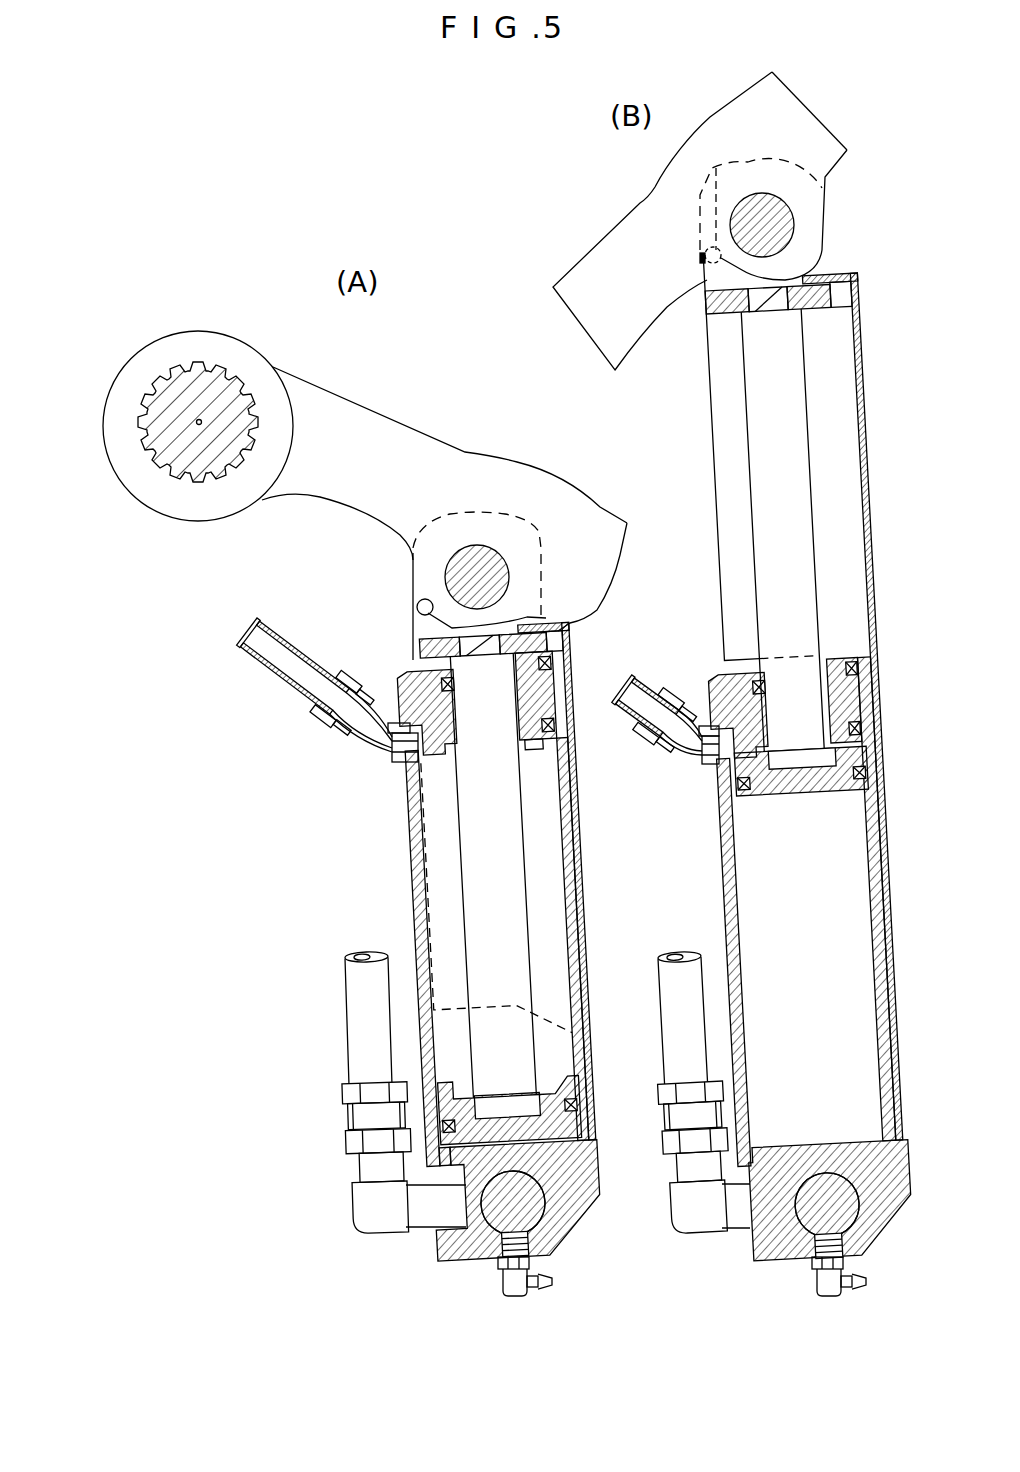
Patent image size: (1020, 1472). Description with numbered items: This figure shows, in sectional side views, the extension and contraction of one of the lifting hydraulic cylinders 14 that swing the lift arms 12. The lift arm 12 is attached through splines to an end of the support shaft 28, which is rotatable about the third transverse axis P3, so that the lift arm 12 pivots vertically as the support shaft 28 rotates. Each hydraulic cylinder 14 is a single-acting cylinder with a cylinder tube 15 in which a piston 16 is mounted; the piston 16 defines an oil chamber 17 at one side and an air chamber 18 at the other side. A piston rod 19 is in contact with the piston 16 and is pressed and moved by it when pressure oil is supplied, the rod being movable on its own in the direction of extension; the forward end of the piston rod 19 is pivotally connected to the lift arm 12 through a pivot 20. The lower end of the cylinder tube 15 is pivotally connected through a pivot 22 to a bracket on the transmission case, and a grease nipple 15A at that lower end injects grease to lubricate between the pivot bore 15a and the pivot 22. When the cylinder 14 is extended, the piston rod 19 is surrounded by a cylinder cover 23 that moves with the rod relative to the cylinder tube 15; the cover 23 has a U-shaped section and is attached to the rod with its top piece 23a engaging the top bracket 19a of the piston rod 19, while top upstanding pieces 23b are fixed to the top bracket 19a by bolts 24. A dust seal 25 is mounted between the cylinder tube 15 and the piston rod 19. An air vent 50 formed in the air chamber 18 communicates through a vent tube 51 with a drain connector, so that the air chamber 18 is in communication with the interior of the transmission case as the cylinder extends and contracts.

The lift arm 12 is at (375, 418).
The hydraulic cylinder 14 is at (394, 855).
The cylinder tube 15 is at (407, 910).
The pivot bore 15a is at (545, 1222).
The grease nipple 15A is at (555, 1280).
The piston 16 is at (470, 1100).
The oil chamber 17 is at (857, 912).
The air chamber 18 is at (555, 1058).
The piston rod 19 is at (470, 805).
The top bracket 19a is at (420, 648).
The pivot 20 is at (478, 552).
The pivot 22 is at (479, 1241).
The cylinder cover 23 is at (587, 935).
The top piece 23a is at (557, 629).
The top upstanding piece 23b is at (726, 192).
The bolt 24 is at (417, 600).
The dust seal 25 is at (507, 684).
The support shaft 28 is at (177, 476).
The third transverse axis P3 is at (203, 418).
The air vent 50 is at (388, 758).
The vent tube 51 is at (272, 660).